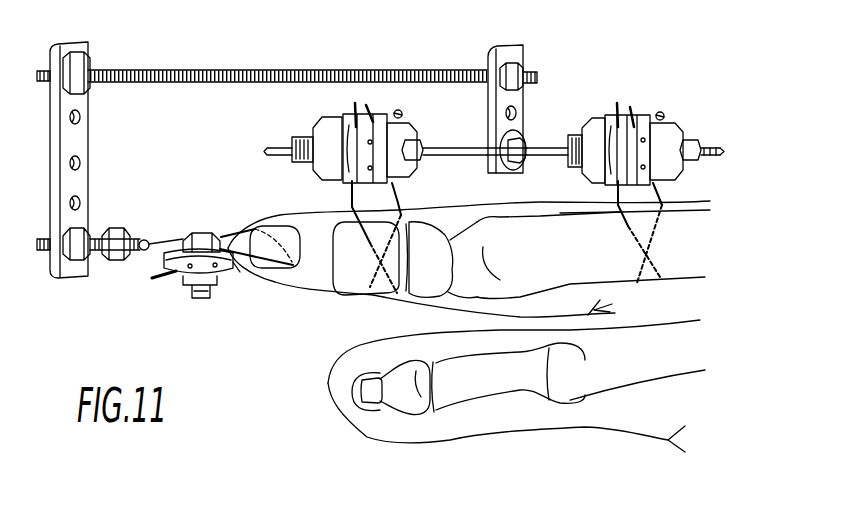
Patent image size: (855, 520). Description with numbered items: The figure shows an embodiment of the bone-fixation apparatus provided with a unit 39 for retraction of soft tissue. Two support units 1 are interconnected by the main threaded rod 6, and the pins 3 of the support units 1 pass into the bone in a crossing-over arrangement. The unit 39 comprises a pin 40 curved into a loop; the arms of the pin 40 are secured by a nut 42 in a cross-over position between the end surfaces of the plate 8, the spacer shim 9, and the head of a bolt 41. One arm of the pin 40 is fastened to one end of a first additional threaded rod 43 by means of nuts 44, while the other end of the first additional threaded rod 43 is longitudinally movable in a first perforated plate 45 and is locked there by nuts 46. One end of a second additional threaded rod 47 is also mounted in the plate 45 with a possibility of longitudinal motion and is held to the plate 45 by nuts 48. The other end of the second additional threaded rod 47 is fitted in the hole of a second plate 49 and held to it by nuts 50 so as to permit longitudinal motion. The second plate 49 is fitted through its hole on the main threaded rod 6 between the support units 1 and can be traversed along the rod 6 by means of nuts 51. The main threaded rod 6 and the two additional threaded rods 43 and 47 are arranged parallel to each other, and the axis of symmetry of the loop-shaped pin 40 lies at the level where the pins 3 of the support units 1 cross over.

The support unit 1 is at (325, 176).
The pin 3 is at (398, 198).
The main threaded rod 6 is at (723, 144).
The plate 8 is at (223, 234).
The spacer shim 9 is at (224, 274).
The unit for retraction of soft tissue 39 is at (170, 286).
The pin curved into a loop 40 is at (250, 266).
The bolt 41 is at (198, 232).
The nut 42 is at (187, 297).
The first additional threaded rod 43 is at (146, 238).
The nuts 44 is at (112, 230).
The first perforated plate 45 is at (88, 148).
The nuts 46 is at (85, 265).
The second additional threaded rod 47 is at (186, 69).
The nuts 48 is at (48, 55).
The second plate 49 is at (523, 124).
The nuts 50 is at (490, 56).
The nuts 51 is at (490, 166).